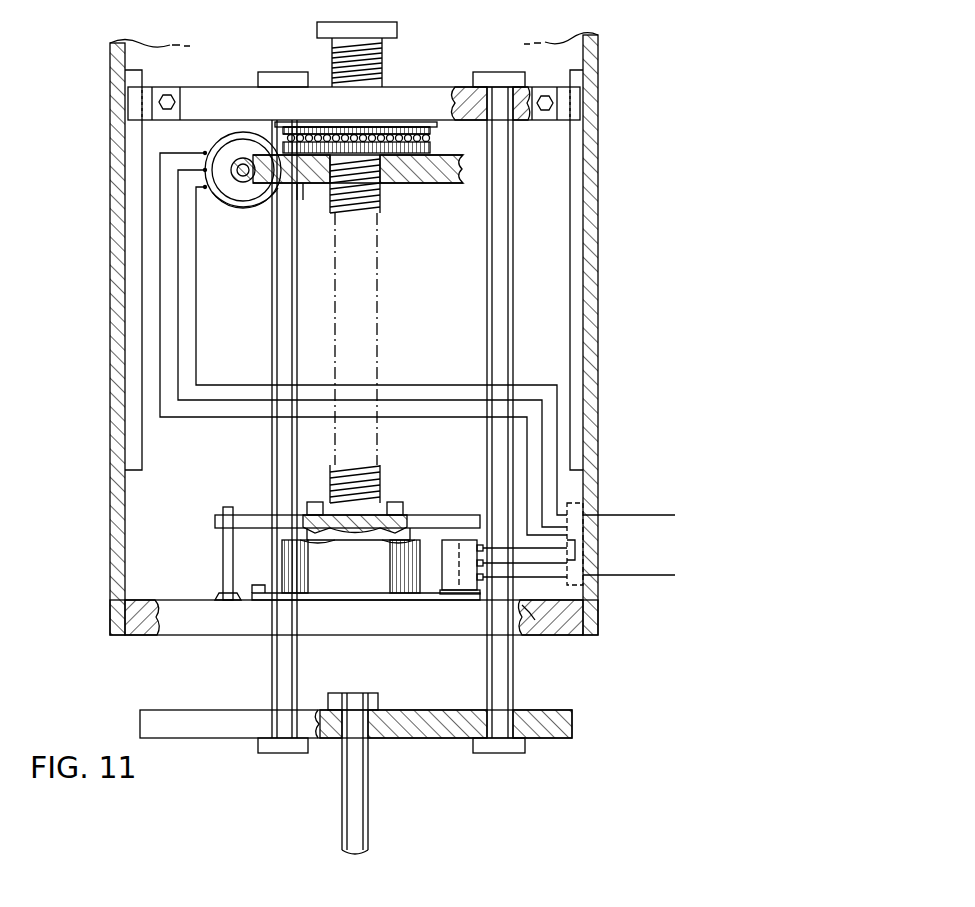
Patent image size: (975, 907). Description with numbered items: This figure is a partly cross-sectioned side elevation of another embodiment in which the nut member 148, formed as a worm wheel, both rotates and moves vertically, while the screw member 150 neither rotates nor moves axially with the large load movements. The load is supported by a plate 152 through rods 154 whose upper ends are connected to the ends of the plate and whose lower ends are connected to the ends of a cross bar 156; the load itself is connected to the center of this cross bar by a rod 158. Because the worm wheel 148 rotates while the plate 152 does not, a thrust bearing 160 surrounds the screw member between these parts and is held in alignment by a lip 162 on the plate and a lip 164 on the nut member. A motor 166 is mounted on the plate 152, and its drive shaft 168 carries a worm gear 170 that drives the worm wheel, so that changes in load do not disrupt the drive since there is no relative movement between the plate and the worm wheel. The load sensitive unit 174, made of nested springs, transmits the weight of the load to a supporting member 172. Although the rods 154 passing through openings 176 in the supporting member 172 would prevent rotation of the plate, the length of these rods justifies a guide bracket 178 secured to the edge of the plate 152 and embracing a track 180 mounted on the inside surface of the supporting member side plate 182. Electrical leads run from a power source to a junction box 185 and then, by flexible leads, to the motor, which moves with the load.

The nut member 148 is at (410, 178).
The screw member 150 is at (365, 210).
The plate 152 is at (457, 87).
The rods 154 is at (490, 302).
The cross bar 156 is at (222, 708).
The rod 158 is at (370, 784).
The thrust bearing 160 is at (446, 129).
The lip 162 is at (401, 121).
The lip 164 is at (312, 180).
The motor 166 is at (255, 208).
The drive shaft 168 is at (236, 182).
The worm gear 170 is at (240, 158).
The supporting member 172 is at (333, 627).
The load sensitive unit 174 is at (243, 491).
The openings 176 is at (513, 613).
The guide bracket 178 is at (541, 92).
The track 180 is at (132, 340).
The side plate 182 is at (592, 383).
The junction box 185 is at (583, 572).